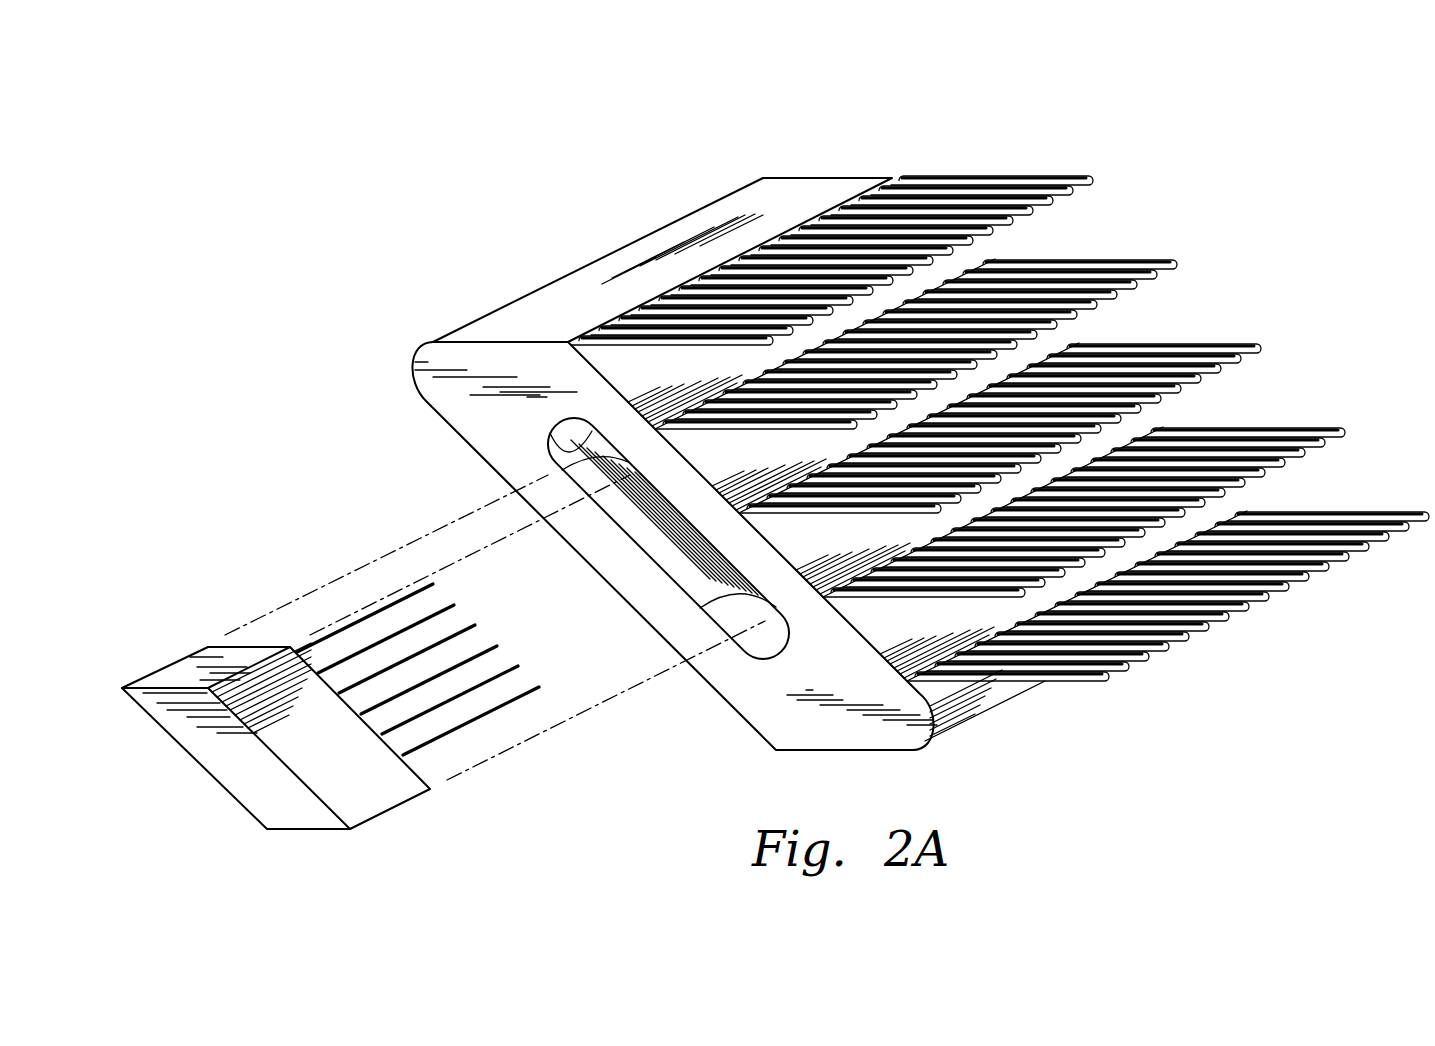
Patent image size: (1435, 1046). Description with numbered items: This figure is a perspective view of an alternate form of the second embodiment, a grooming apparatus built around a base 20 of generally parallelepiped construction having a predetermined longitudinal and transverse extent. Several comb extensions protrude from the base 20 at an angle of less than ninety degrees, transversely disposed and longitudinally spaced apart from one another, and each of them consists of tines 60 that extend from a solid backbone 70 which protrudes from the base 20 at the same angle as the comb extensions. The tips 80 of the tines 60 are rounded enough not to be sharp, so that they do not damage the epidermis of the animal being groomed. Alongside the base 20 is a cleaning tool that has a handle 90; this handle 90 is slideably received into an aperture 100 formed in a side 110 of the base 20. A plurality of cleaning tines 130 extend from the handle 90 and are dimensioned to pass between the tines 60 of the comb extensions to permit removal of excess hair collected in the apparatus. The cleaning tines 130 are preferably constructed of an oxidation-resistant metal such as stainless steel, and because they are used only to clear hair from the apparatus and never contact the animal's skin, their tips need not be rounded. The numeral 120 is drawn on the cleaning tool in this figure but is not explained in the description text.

The base 20 is at (892, 436).
The tines 60 is at (1000, 378).
The backbone 70 is at (890, 188).
The tips 80 is at (1092, 186).
The handle 90 is at (330, 691).
The aperture 100 is at (548, 442).
The side 110 is at (818, 686).
The connector top surface 120 is at (210, 667).
The cleaning tines 130 is at (388, 603).